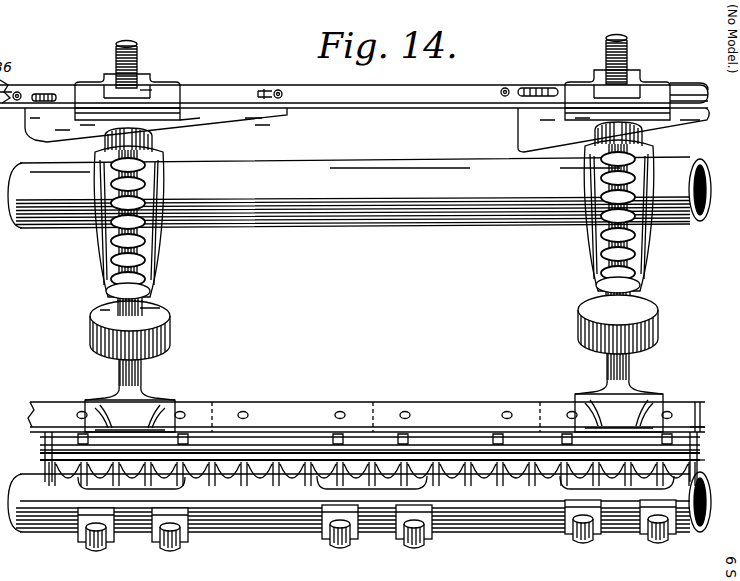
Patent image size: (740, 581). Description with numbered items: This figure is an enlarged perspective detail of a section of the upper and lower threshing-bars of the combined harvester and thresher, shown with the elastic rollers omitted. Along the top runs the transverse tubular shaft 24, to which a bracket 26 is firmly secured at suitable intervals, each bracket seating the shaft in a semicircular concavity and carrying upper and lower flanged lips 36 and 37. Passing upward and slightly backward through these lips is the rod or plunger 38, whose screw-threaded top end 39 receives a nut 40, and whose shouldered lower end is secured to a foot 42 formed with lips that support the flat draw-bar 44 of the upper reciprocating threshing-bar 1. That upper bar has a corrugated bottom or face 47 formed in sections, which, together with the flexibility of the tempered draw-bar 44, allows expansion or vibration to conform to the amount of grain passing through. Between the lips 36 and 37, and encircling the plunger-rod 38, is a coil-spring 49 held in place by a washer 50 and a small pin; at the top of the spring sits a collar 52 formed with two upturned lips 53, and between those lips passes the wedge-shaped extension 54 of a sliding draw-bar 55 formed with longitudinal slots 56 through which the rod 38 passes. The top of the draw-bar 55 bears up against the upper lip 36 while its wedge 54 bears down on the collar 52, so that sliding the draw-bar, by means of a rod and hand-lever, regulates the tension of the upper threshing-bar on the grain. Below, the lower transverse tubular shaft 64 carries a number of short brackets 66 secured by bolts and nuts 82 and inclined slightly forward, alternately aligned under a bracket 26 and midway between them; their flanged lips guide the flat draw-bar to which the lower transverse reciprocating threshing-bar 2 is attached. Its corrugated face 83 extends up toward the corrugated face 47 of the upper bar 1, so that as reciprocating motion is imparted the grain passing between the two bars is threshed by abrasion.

The upper reciprocating threshing-bar 1 is at (708, 433).
The lower transverse reciprocating threshing-bar 2 is at (708, 461).
The transverse tubular shaft 24 is at (359, 192).
The bracket 26 is at (368, 219).
The upper flanged lip 36 is at (165, 88).
The lower flanged lip 37 is at (168, 340).
The rod or plunger 38 is at (118, 262).
The top end of rod 39 is at (138, 60).
The nut 40 is at (143, 92).
The foot 42 is at (374, 393).
The flat draw-bar 44 is at (716, 414).
The corrugated bottom or face 47 is at (320, 440).
The coil-spring 49 is at (122, 230).
The washer 50 is at (106, 291).
The collar 52 is at (158, 146).
The upturned flanges or lips 53 is at (195, 130).
The wedge-shaped extension 54 is at (44, 136).
The draw-bar 55 is at (354, 94).
The longitudinal slots 56 is at (48, 94).
The lower transverse tubular shaft 64 is at (440, 494).
The short brackets 66 is at (156, 488).
The bolts and nuts 82 is at (160, 546).
The corrugated face 83 is at (280, 478).